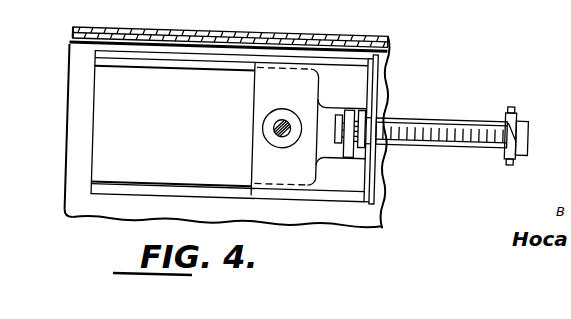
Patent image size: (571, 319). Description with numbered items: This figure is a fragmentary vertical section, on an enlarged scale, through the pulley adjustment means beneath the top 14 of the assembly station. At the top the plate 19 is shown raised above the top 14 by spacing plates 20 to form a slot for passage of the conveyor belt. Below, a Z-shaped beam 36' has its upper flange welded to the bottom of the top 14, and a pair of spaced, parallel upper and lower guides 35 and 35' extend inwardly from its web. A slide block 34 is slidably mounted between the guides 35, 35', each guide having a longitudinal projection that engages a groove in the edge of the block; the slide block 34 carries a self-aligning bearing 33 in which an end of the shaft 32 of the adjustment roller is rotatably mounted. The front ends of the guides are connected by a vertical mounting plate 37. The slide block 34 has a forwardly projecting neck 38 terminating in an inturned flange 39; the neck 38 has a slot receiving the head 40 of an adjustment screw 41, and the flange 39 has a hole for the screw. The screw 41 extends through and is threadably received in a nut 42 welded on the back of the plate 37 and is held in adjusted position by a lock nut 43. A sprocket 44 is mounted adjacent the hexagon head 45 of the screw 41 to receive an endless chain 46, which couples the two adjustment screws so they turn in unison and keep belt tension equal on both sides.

The top 14 is at (391, 50).
The plate 19 is at (388, 38).
The spacing plates 20 is at (72, 31).
The shaft 32 is at (292, 129).
The self-aligning bearing 33 is at (272, 110).
The slide block 34 is at (186, 124).
The upper guide 35 is at (231, 75).
The lower guide 35' is at (227, 176).
The Z-shaped beam 36' is at (53, 130).
The vertical mounting plate 37 is at (389, 89).
The neck 38 is at (325, 104).
The inturned flange 39 is at (351, 158).
The head 40 is at (337, 146).
The adjustment screw 41 is at (449, 128).
The nut 42 is at (362, 150).
The lock nut 43 is at (378, 163).
The sprocket 44 is at (508, 153).
The hexagon head 45 is at (522, 127).
The endless chain 46 is at (512, 118).